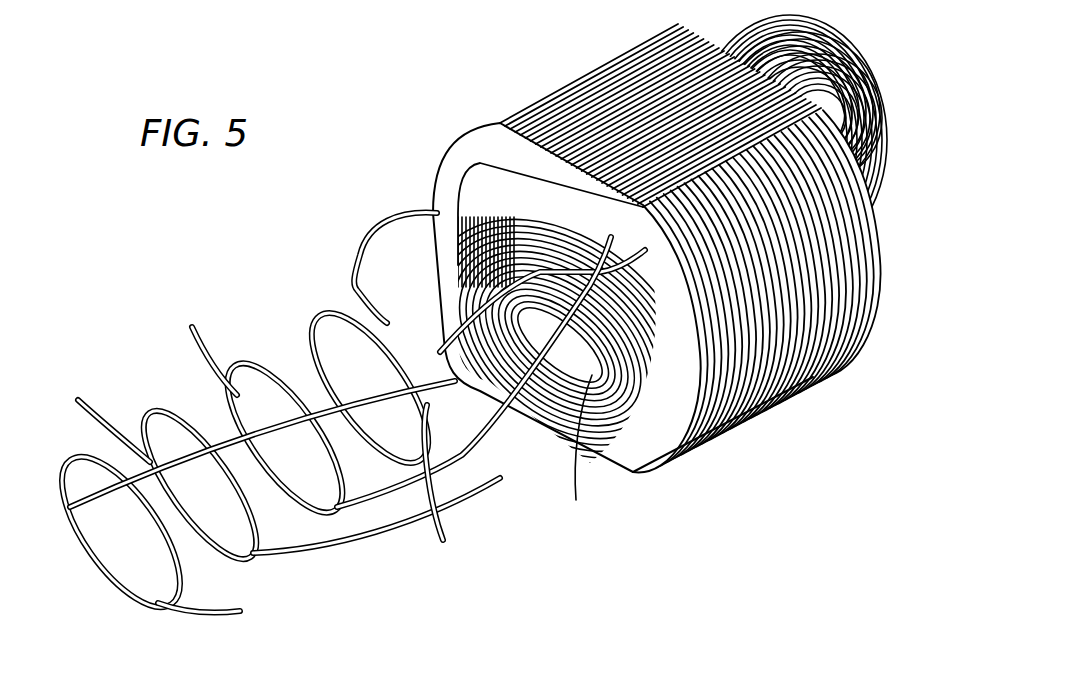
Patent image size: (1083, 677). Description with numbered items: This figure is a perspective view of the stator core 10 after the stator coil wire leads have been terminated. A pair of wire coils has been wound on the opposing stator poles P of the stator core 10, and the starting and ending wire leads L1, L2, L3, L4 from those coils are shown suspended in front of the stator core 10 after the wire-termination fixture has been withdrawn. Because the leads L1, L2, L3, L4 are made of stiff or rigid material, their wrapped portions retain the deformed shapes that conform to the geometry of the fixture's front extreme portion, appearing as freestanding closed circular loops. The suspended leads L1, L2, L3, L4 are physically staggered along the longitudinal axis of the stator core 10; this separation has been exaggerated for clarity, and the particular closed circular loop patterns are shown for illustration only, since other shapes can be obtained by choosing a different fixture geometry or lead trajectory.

The stator core 10 is at (556, 106).
The wire lead L1 is at (380, 256).
The wire lead L2 is at (250, 360).
The wire lead L3 is at (287, 553).
The wire lead L4 is at (70, 463).
The stator pole P is at (577, 501).